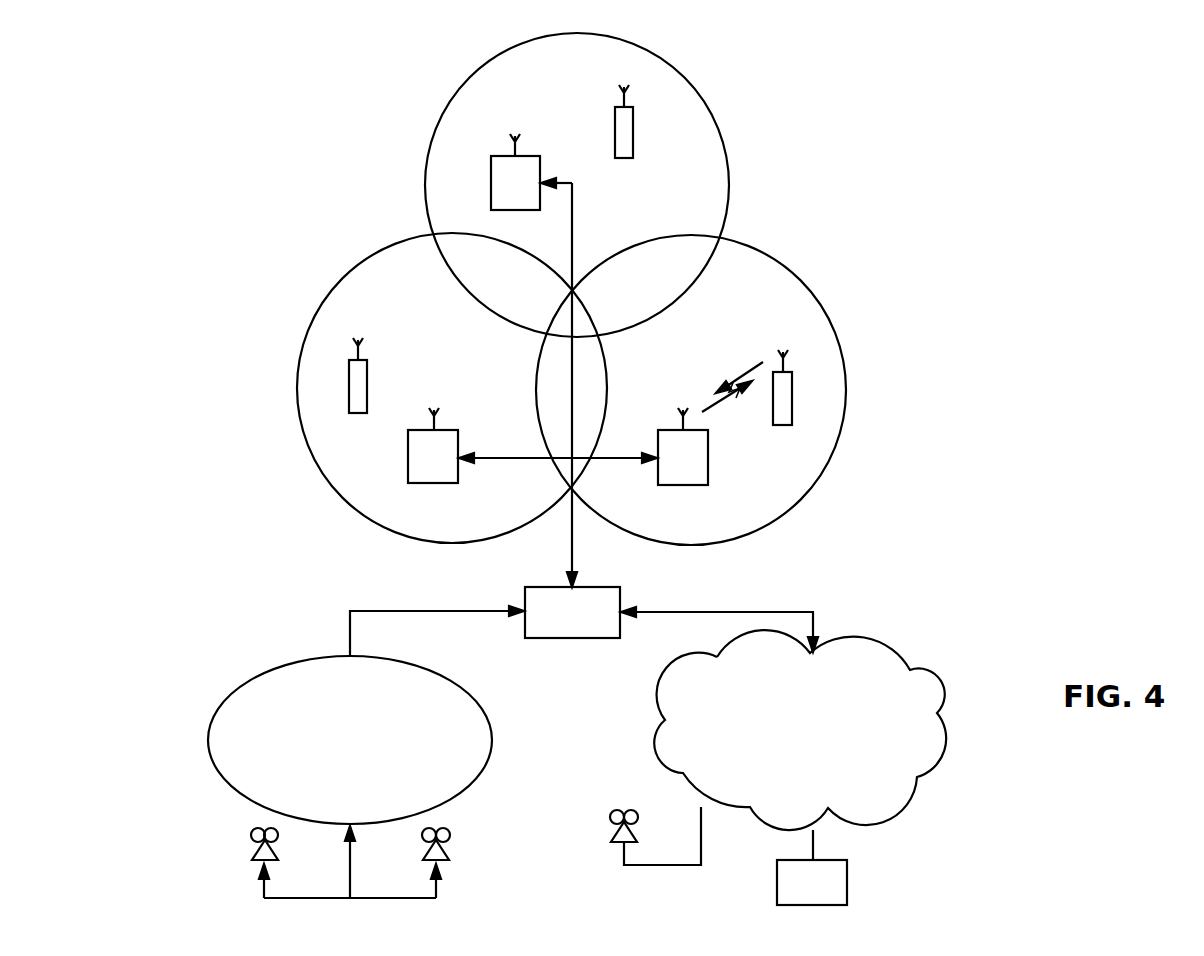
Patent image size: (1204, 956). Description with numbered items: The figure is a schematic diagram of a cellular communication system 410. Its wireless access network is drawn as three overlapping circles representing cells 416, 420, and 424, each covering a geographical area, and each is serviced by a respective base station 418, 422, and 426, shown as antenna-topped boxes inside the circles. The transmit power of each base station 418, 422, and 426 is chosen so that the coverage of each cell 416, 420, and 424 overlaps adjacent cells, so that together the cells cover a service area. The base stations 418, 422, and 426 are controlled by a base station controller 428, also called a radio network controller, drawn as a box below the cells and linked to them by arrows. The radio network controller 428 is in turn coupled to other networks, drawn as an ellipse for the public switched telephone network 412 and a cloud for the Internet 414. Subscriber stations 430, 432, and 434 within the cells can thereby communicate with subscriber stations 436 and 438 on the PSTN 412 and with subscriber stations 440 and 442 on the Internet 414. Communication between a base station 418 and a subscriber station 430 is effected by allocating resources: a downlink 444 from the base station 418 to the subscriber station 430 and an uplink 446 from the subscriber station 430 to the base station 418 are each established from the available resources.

The cellular communication system 410 is at (812, 158).
The public switched telephone network 412 is at (222, 752).
The Internet 414 is at (655, 750).
The cell 416 is at (813, 321).
The base station 418 is at (680, 486).
The cell 420 is at (300, 420).
The base station 422 is at (408, 466).
The cell 424 is at (432, 150).
The base station 426 is at (491, 172).
The base station controller 428 is at (598, 587).
The subscriber station 430 is at (792, 410).
The subscriber station 432 is at (367, 374).
The subscriber station 434 is at (633, 139).
The subscriber station 436 is at (252, 857).
The subscriber station 438 is at (447, 857).
The subscriber station 440 is at (847, 873).
The subscriber station 442 is at (617, 845).
The downlink 444 is at (737, 412).
The uplink 446 is at (728, 370).